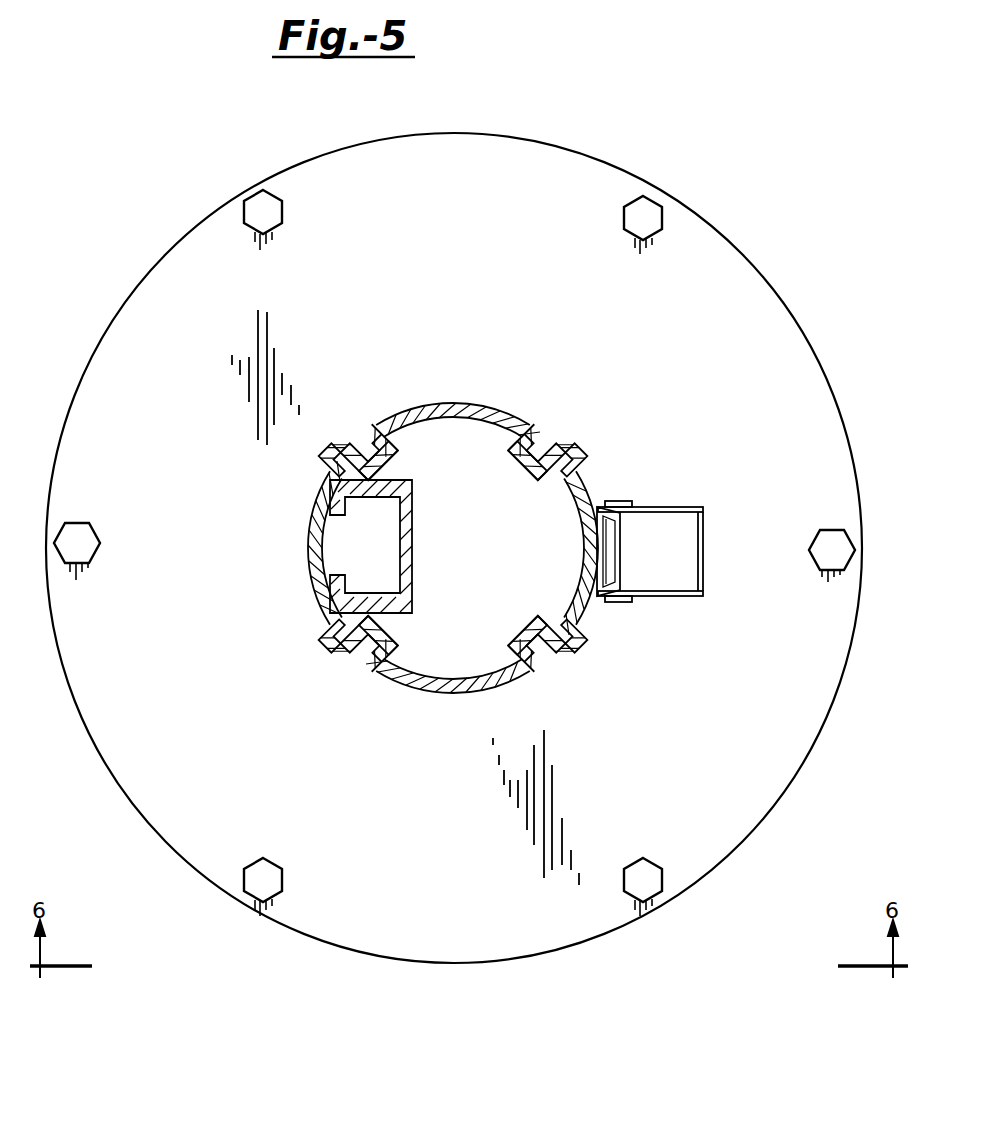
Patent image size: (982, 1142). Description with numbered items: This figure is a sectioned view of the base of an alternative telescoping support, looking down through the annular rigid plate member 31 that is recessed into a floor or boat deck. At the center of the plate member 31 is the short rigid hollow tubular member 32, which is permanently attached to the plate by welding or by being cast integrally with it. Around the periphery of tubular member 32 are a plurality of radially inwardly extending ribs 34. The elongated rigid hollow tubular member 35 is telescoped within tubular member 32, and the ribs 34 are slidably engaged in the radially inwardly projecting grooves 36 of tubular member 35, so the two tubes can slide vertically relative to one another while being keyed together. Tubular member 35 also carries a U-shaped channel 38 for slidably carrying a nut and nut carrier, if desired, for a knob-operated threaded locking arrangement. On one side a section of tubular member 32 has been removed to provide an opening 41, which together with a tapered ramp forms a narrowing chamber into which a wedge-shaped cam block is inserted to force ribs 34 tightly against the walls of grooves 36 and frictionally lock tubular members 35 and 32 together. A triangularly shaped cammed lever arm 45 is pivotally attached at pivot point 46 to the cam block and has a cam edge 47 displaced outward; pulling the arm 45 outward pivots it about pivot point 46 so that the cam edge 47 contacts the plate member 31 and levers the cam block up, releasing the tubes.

The annular rigid plate member 31 is at (738, 272).
The rigid hollow tubular member 32 is at (325, 538).
The radially inwardly extending ribs 34 is at (360, 452).
The elongated rigid hollow tubular member 35 is at (486, 425).
The radially inwardly projecting grooves 36 is at (388, 468).
The U-shaped channel 38 is at (365, 556).
The opening 41 is at (596, 510).
The cammed lever arm 45 is at (650, 508).
The pivot point 46 is at (622, 602).
The cam edge 47 is at (695, 598).